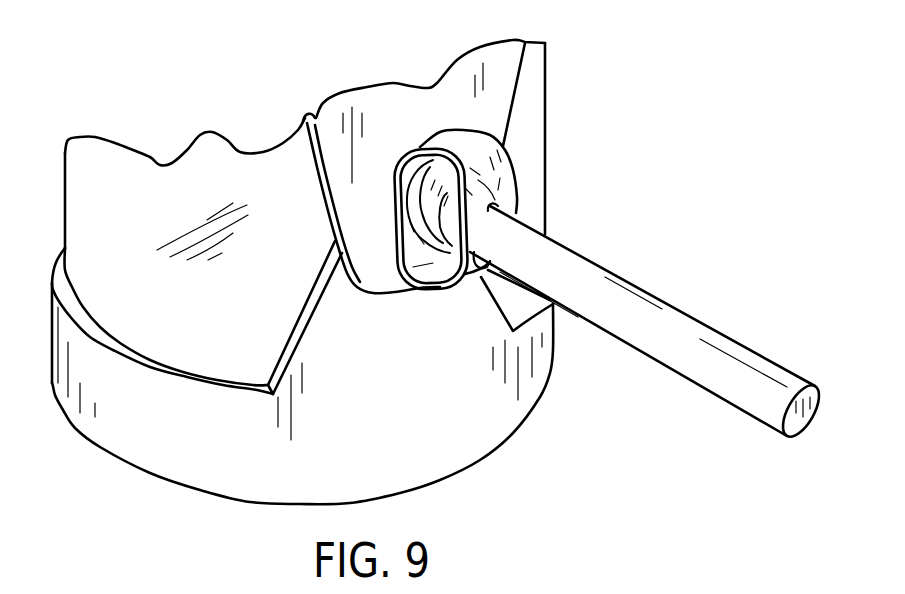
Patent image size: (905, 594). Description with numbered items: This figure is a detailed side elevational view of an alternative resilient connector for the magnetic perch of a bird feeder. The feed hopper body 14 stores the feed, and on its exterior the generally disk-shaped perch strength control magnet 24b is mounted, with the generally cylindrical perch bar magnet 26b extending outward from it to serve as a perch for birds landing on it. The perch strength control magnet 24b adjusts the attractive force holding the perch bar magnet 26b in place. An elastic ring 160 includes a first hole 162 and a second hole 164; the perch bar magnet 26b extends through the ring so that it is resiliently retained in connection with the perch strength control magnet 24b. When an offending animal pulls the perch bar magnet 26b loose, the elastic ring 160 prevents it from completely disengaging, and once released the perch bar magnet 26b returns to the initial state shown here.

The feed hopper body 14 is at (150, 162).
The elastic ring 160 is at (460, 143).
The first hole 162 is at (393, 210).
The second hole 164 is at (517, 208).
The perch strength control magnet 24b is at (440, 262).
The perch bar magnet 26b is at (697, 363).